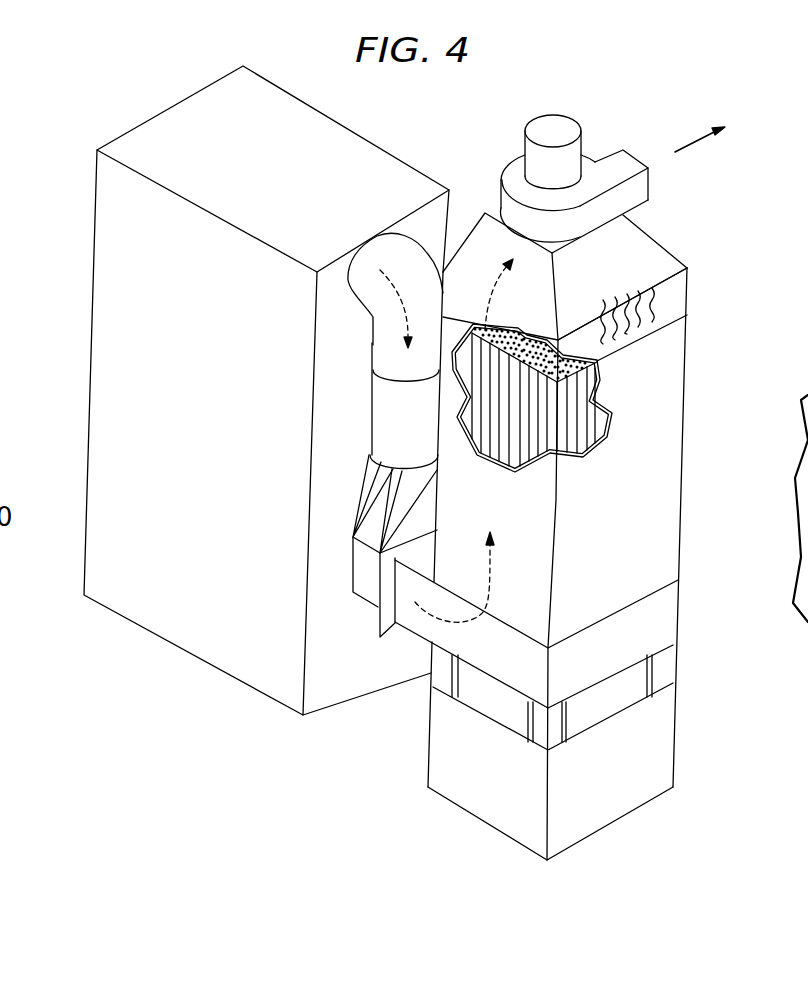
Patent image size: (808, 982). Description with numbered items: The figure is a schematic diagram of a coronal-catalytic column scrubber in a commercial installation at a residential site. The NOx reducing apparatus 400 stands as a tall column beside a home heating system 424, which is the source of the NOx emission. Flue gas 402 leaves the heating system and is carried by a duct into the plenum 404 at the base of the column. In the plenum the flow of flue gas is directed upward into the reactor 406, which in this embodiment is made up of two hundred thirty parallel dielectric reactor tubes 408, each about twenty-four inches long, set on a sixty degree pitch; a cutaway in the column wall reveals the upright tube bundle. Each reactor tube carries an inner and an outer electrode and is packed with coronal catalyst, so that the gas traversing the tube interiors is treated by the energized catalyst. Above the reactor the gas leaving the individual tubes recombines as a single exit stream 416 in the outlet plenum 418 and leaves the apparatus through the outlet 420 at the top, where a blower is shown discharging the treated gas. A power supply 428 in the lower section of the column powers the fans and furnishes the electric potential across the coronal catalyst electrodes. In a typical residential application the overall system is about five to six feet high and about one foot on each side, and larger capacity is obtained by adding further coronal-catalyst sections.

The NOx reducing apparatus 400 is at (595, 88).
The flue gas 402 is at (380, 353).
The plenum 404 is at (393, 247).
The reactor 406 is at (592, 424).
The reactor tubes 408 is at (510, 327).
The exit stream 416 is at (653, 313).
The outlet plenum 418 is at (680, 297).
The outlet 420 is at (635, 197).
The home heating system 424 is at (113, 355).
The power supply 428 is at (662, 748).